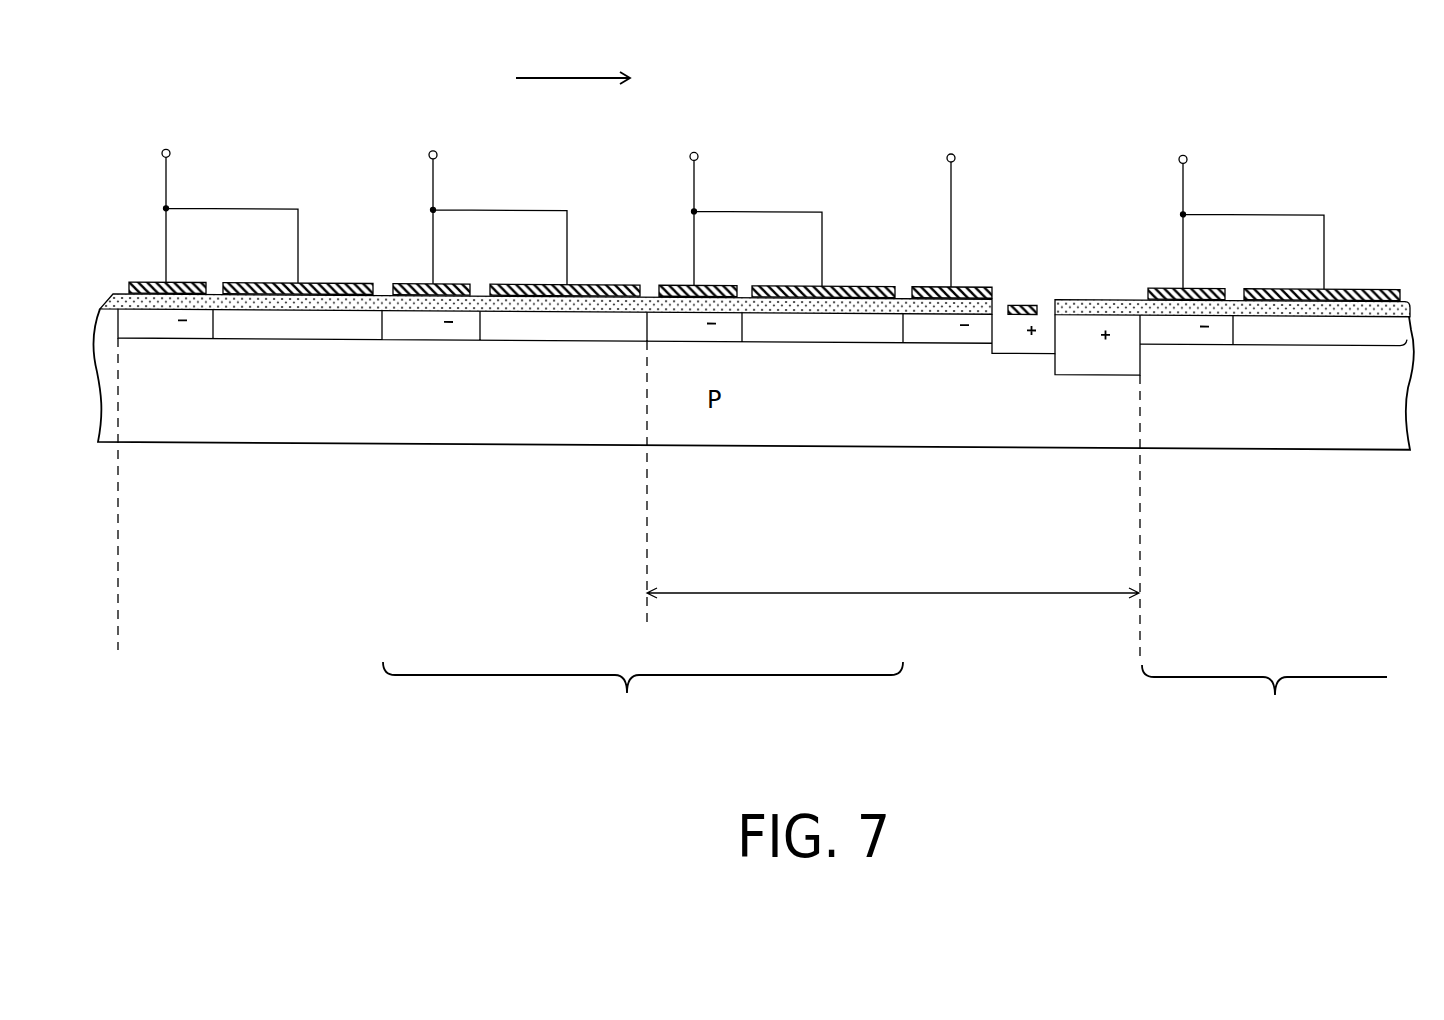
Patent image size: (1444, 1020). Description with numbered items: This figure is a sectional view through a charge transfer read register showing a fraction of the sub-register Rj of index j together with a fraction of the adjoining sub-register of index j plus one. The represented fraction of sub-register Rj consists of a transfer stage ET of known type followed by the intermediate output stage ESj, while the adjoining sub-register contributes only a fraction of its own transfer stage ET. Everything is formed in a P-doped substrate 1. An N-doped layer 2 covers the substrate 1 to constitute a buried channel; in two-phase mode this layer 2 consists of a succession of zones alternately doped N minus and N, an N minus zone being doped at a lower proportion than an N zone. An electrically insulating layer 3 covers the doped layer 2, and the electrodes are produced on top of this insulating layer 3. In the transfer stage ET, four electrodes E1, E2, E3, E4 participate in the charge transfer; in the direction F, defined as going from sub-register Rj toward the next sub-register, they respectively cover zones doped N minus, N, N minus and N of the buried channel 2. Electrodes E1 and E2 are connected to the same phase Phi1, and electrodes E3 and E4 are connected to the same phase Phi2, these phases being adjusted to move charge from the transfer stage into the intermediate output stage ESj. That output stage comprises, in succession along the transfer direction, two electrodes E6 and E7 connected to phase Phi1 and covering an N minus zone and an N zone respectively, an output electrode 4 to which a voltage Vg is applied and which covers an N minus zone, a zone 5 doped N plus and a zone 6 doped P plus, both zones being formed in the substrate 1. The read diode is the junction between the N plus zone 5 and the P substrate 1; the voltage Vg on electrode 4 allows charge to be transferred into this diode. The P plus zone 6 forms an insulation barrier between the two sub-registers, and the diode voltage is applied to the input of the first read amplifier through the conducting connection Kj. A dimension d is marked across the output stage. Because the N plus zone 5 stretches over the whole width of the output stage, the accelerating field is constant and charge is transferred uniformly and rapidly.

The P-doped substrate 1 is at (547, 418).
The N-doped layer 2 is at (132, 322).
The electrically insulating layer 3 is at (387, 300).
The output electrode 4 is at (983, 290).
The N⁺ doped zone 5 is at (1038, 343).
The P⁺ doped zone 6 is at (1120, 338).
The transfer electrode E1 is at (148, 282).
The transfer electrode E2 is at (267, 283).
The transfer electrode E3 is at (415, 283).
The transfer electrode E4 is at (532, 284).
The output stage electrode E6 is at (677, 286).
The output stage electrode E7 is at (790, 286).
The conducting connection Kj is at (1025, 305).
The transfer stage ET is at (347, 412).
The intermediate output stage ESj is at (838, 417).
The voltage Vg is at (971, 217).
The phase Phi1 is at (729, 204).
The phase Phi2 is at (487, 202).
The distance d is at (893, 581).
The direction F is at (573, 65).
The sub-register Rj is at (643, 695).